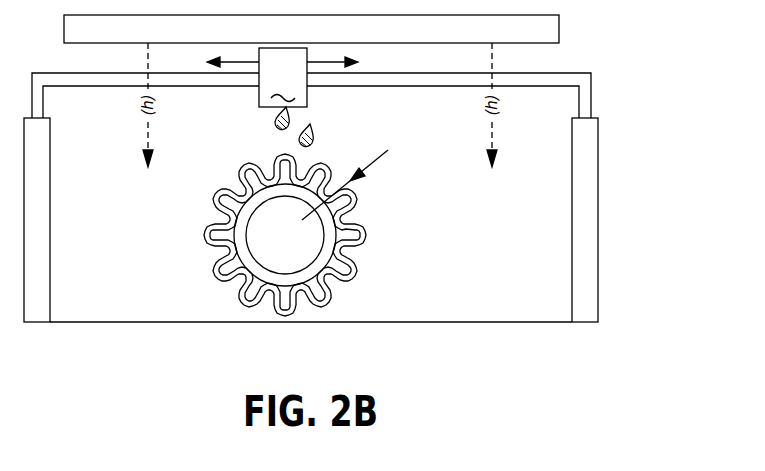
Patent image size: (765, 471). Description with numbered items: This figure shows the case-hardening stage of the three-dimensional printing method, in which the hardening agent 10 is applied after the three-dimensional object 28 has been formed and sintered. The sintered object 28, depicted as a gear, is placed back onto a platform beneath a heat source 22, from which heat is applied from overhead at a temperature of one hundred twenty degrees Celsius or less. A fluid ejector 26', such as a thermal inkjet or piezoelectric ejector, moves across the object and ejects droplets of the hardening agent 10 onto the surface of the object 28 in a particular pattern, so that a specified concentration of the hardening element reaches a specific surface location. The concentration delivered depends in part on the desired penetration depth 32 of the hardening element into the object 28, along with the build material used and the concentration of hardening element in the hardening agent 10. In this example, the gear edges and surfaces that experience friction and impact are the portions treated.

The heat source 22 is at (549, 30).
The fluid ejector 26' is at (283, 77).
The hardening agent 10 is at (276, 121).
The 3D object 28 is at (377, 239).
The penetration depth 32 is at (388, 152).